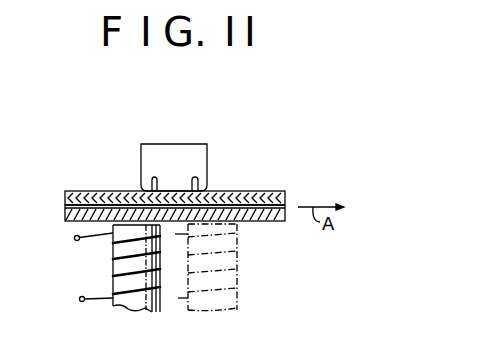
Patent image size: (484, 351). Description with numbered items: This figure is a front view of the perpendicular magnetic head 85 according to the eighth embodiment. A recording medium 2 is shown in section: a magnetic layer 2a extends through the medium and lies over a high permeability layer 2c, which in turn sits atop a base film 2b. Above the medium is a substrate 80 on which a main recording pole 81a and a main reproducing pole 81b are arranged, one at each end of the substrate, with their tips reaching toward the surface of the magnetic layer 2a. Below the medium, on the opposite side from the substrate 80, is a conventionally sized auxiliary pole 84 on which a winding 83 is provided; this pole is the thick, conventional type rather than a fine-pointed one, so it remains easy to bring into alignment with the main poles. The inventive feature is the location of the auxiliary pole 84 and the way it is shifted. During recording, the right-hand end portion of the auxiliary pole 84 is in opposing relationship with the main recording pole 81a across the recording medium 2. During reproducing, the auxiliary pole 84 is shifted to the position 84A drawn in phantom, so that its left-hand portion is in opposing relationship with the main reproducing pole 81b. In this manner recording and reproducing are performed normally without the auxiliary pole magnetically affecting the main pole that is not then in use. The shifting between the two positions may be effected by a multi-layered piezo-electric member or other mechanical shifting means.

The recording medium 2 is at (88, 184).
The magnetic layer 2a is at (272, 191).
The base film 2b is at (68, 212).
The high permeability layer 2c is at (66, 204).
The substrate 80 is at (190, 147).
The main recording pole 81a is at (152, 182).
The main reproducing pole 81b is at (198, 182).
The winding 83 is at (92, 238).
The auxiliary pole 84 is at (125, 302).
The shifted position of auxiliary pole 84A is at (242, 262).
The perpendicular magnetic head 85 is at (262, 172).